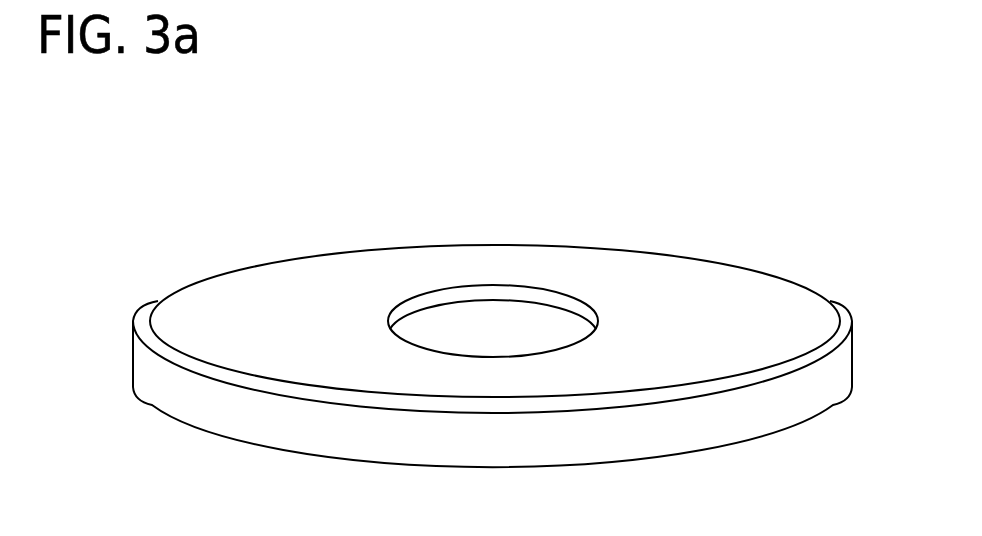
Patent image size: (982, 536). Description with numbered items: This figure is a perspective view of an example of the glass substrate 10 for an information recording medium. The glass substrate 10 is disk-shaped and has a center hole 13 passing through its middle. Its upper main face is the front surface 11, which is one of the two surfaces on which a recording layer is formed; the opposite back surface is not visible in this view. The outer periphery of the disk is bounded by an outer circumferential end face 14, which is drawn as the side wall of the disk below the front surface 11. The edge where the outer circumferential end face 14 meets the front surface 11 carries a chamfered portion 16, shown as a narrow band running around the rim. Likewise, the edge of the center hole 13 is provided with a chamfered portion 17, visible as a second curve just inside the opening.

The glass substrate 10 is at (180, 204).
The front surface 11 is at (309, 277).
The center hole 13 is at (524, 320).
The outer circumferential end face 14 is at (146, 361).
The chamfered portion 16 is at (842, 327).
The chamfered portion 17 is at (427, 303).